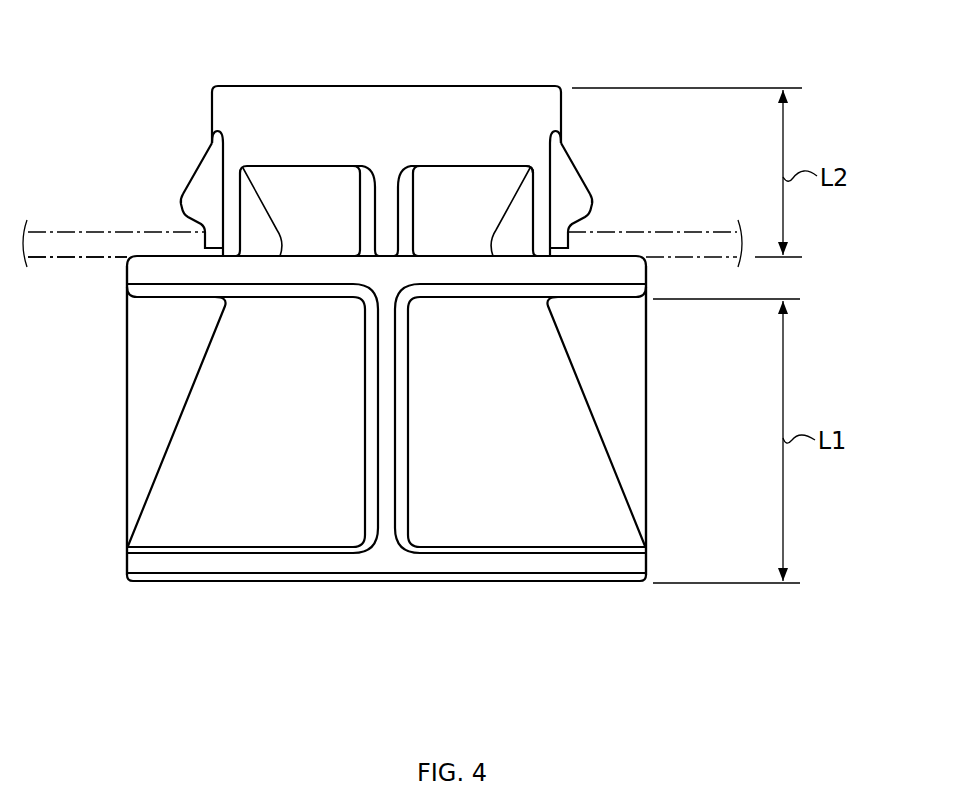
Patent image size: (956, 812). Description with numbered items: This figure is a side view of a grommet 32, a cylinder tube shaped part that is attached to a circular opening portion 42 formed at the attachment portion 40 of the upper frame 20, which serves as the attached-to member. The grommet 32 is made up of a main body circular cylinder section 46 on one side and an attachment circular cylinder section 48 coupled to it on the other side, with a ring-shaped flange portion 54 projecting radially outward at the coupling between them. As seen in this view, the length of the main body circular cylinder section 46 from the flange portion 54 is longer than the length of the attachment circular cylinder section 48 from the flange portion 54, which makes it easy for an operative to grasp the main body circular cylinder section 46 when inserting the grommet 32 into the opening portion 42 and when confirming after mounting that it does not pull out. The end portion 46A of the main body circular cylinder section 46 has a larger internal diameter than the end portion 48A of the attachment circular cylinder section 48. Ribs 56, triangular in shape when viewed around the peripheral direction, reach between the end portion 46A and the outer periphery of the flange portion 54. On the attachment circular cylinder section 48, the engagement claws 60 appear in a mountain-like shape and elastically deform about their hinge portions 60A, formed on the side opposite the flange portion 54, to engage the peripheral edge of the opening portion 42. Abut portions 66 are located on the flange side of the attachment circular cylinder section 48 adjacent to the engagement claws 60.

The upper frame 20 is at (52, 259).
The grommet 32 is at (119, 598).
The attachment portion 40 is at (68, 230).
The opening portion 42 is at (538, 232).
The main body circular cylinder section 46 is at (124, 566).
The end portion of the main body circular cylinder section 46A is at (259, 582).
The attachment circular cylinder section 48 is at (210, 110).
The end portion of the attachment circular cylinder section 48A is at (278, 86).
The flange portion 54 is at (124, 284).
The rib 56 is at (124, 410).
The engagement claw 60 is at (180, 198).
The hinge portion 60A is at (212, 148).
The abut portion 66 is at (236, 218).